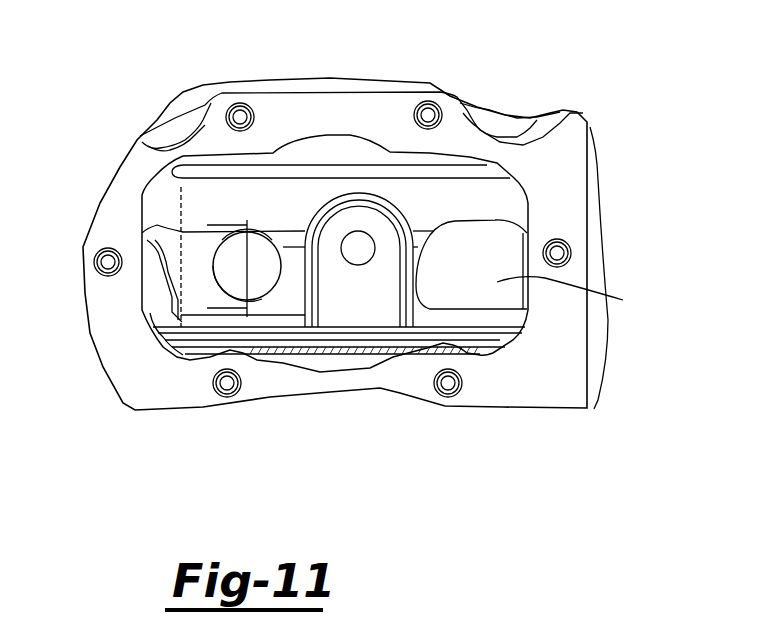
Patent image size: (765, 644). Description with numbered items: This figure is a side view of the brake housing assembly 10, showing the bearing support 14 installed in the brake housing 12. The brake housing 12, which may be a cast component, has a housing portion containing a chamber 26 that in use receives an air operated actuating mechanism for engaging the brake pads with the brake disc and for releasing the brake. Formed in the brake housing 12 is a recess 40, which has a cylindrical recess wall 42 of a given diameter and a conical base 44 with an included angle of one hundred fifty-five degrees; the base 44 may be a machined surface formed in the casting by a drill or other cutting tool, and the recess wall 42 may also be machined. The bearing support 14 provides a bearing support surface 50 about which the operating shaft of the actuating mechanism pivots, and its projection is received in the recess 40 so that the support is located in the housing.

The brake housing assembly 10 is at (499, 97).
The brake housing 12 is at (572, 95).
The bearing support 14 is at (573, 294).
The chamber 26 is at (349, 148).
The recess 40 is at (251, 230).
The recess wall 42 is at (273, 293).
The base 44 is at (273, 270).
The bearing support surface 50 is at (487, 250).